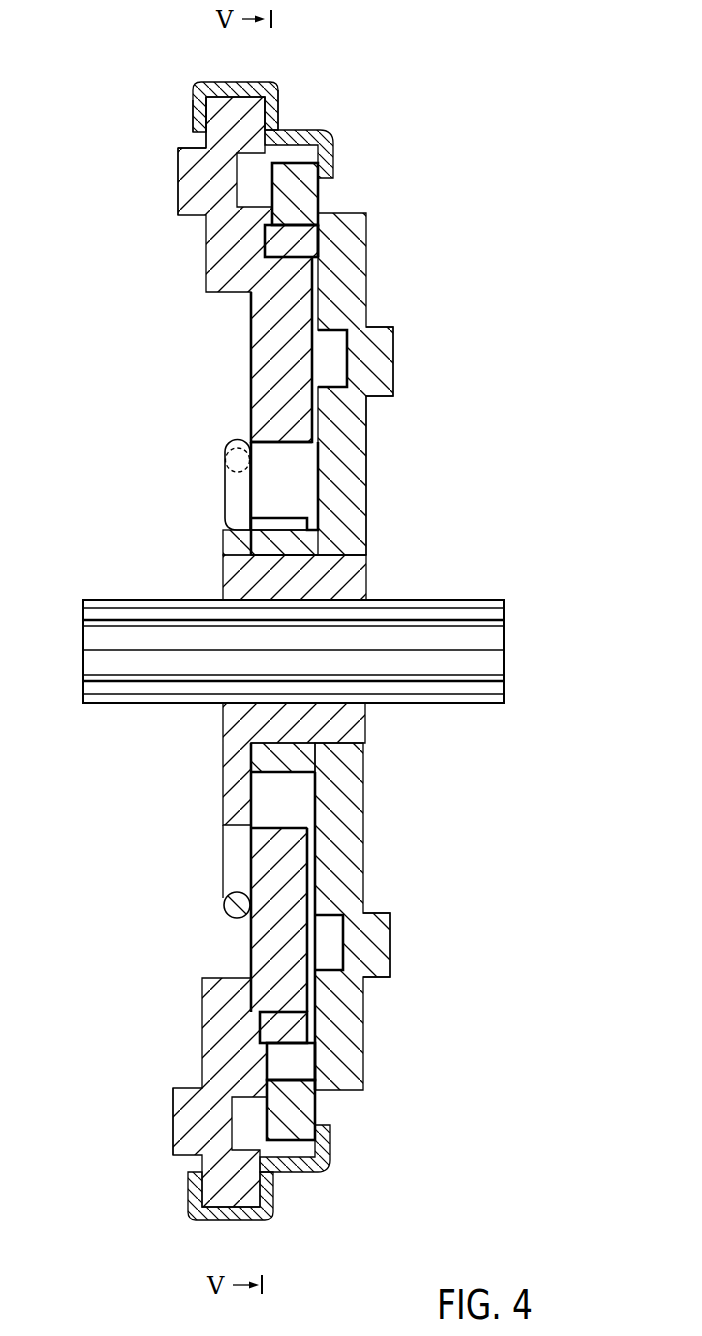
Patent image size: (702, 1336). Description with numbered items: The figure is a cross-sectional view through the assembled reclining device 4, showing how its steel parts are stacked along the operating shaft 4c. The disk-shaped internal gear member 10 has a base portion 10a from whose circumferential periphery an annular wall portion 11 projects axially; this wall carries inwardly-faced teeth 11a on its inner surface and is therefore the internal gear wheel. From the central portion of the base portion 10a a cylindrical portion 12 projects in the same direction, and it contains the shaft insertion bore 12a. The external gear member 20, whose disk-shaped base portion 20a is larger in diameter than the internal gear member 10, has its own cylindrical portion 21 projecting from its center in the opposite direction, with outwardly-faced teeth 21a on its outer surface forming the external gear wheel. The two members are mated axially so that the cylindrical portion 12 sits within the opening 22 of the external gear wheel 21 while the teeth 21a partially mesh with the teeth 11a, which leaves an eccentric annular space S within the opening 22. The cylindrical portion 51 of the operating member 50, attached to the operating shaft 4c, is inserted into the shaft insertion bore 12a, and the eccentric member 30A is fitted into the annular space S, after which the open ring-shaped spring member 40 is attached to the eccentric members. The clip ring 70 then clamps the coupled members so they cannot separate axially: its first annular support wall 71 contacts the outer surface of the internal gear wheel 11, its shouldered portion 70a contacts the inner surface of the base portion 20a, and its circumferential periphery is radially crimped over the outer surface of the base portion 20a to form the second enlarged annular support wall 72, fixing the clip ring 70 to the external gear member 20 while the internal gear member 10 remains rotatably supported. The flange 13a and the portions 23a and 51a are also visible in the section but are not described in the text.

The reclining device 4 is at (301, 624).
The operating shaft 4c is at (477, 611).
The internal gear member 10 is at (364, 651).
The base portion 10a is at (351, 413).
The annular wall portion 11 is at (303, 191).
The inwardly-faced teeth 11a is at (318, 244).
The cylindrical portion 12 is at (284, 541).
The shaft insertion bore 12a is at (334, 573).
The flange 13a is at (383, 353).
The external gear member 20 is at (199, 652).
The base portion 20a is at (218, 142).
The cylindrical portion 21 is at (229, 634).
The outwardly-faced teeth 21a is at (250, 280).
The opening 22 is at (229, 408).
The side flange 23a is at (190, 172).
The eccentric member 30A is at (272, 475).
The spring member 40 is at (236, 493).
The operating member 50 is at (247, 554).
The cylindrical portion 51 is at (331, 722).
The hub lip 51a is at (235, 540).
The clip ring 70 is at (263, 624).
The shouldered portion 70a is at (274, 117).
The first annular support wall 71 is at (331, 153).
The second enlarged annular support wall 72 is at (198, 113).